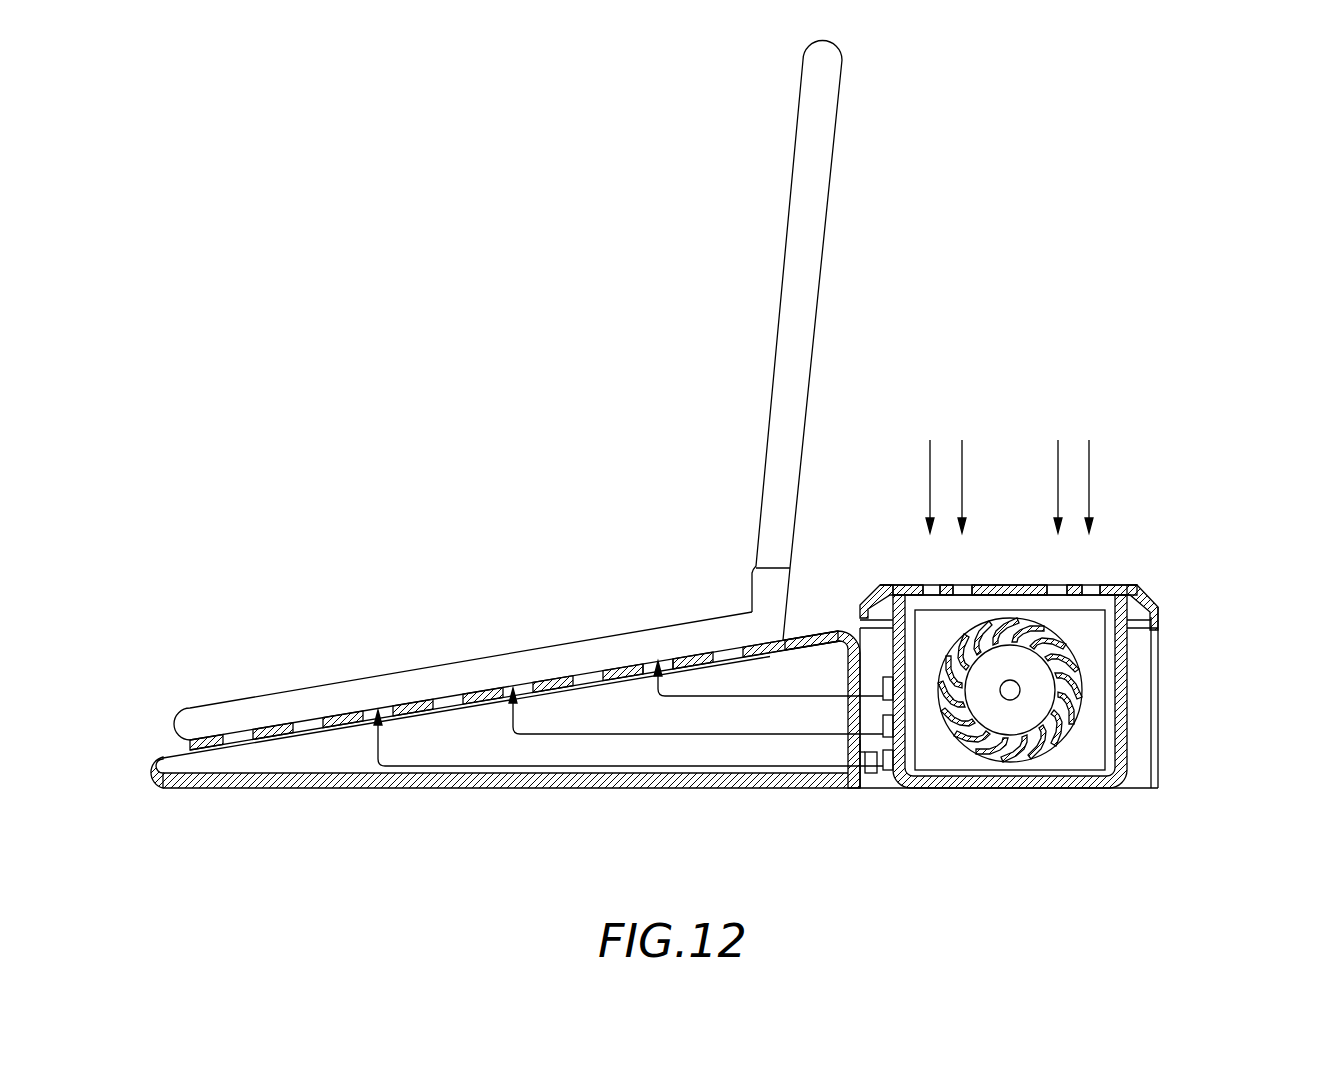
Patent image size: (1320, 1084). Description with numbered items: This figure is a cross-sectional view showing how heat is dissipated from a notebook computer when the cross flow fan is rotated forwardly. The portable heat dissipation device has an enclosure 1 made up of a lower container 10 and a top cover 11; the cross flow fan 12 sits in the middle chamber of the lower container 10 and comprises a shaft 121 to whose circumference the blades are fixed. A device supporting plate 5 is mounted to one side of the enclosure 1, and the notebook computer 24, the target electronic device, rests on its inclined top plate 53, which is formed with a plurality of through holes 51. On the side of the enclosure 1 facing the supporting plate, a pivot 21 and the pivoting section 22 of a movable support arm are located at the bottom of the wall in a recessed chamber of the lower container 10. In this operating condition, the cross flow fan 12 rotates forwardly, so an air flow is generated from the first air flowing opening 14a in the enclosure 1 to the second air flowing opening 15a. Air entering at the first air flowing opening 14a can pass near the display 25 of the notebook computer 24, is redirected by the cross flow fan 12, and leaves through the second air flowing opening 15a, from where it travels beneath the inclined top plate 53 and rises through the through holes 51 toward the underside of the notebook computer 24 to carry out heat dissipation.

The enclosure 1 is at (1192, 497).
The device supporting plate 5 is at (328, 822).
The lower container 10 is at (1150, 726).
The top cover 11 is at (1158, 597).
The cross flow fan 12 is at (1045, 752).
The shaft 121 is at (1008, 698).
The first air flowing opening 14a is at (1057, 585).
The second air flowing opening 15a is at (890, 772).
The pivot 21 is at (872, 774).
The pivoting section 22 is at (862, 780).
The notebook computer 24 is at (583, 401).
The display 25 is at (798, 232).
The through holes 51 is at (730, 652).
The inclined top plate 53 is at (632, 660).